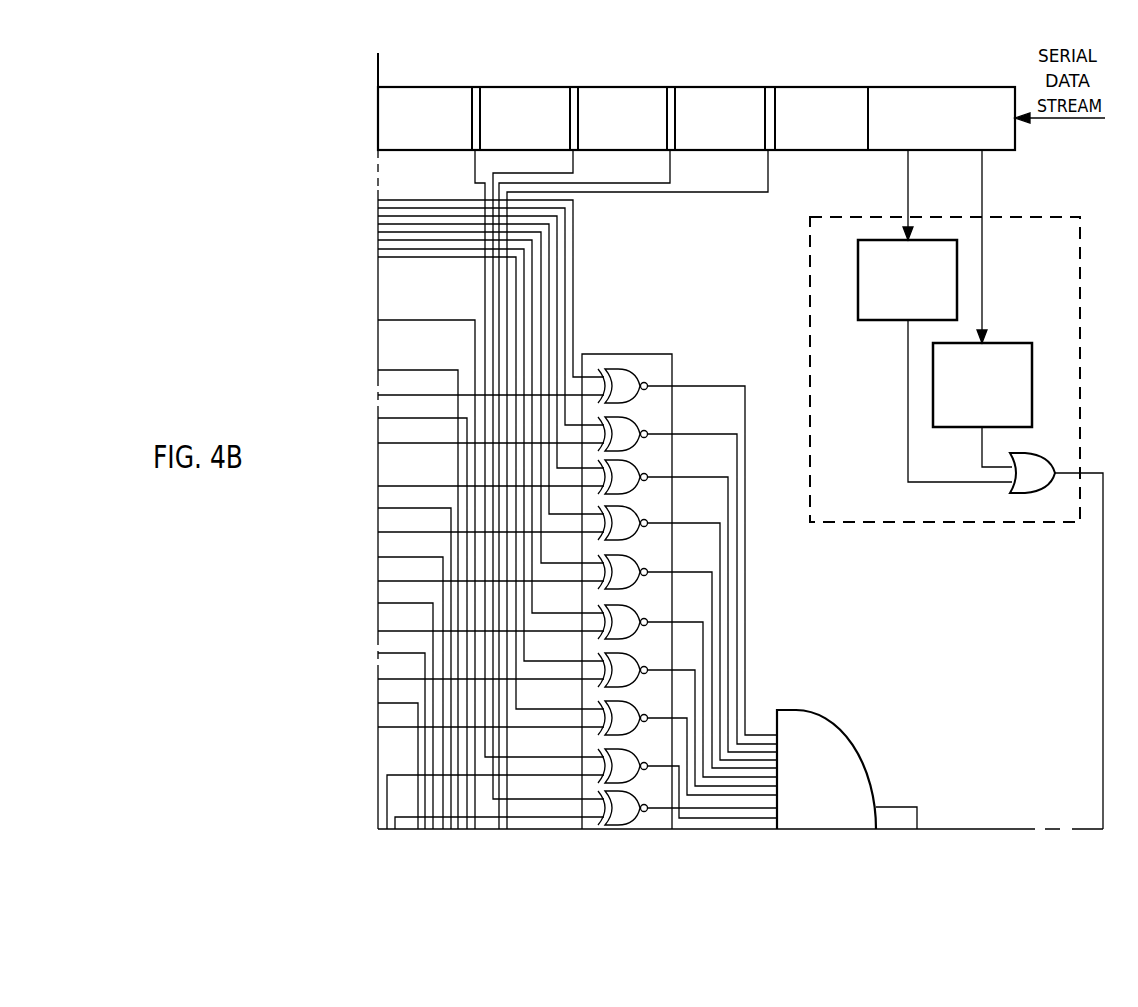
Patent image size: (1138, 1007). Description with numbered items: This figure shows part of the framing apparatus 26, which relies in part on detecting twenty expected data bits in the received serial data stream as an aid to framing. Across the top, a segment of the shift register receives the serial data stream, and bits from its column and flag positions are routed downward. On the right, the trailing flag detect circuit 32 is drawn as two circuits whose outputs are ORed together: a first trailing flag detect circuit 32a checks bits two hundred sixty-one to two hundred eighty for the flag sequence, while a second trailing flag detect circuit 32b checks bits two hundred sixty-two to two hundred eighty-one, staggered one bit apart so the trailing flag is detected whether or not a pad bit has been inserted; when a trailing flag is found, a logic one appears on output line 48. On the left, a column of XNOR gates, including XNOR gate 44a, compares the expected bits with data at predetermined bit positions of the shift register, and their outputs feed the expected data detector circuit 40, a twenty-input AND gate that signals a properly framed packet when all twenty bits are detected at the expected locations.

The framing apparatus 26 is at (690, 45).
The trailing flag detect circuit 32 is at (815, 265).
The first trailing flag detect circuit 32a is at (870, 320).
The second trailing flag detect circuit 32b is at (1018, 346).
The expected data detector circuit 40 is at (796, 714).
The XNOR gate 44a is at (622, 397).
The output line 48 is at (1101, 598).